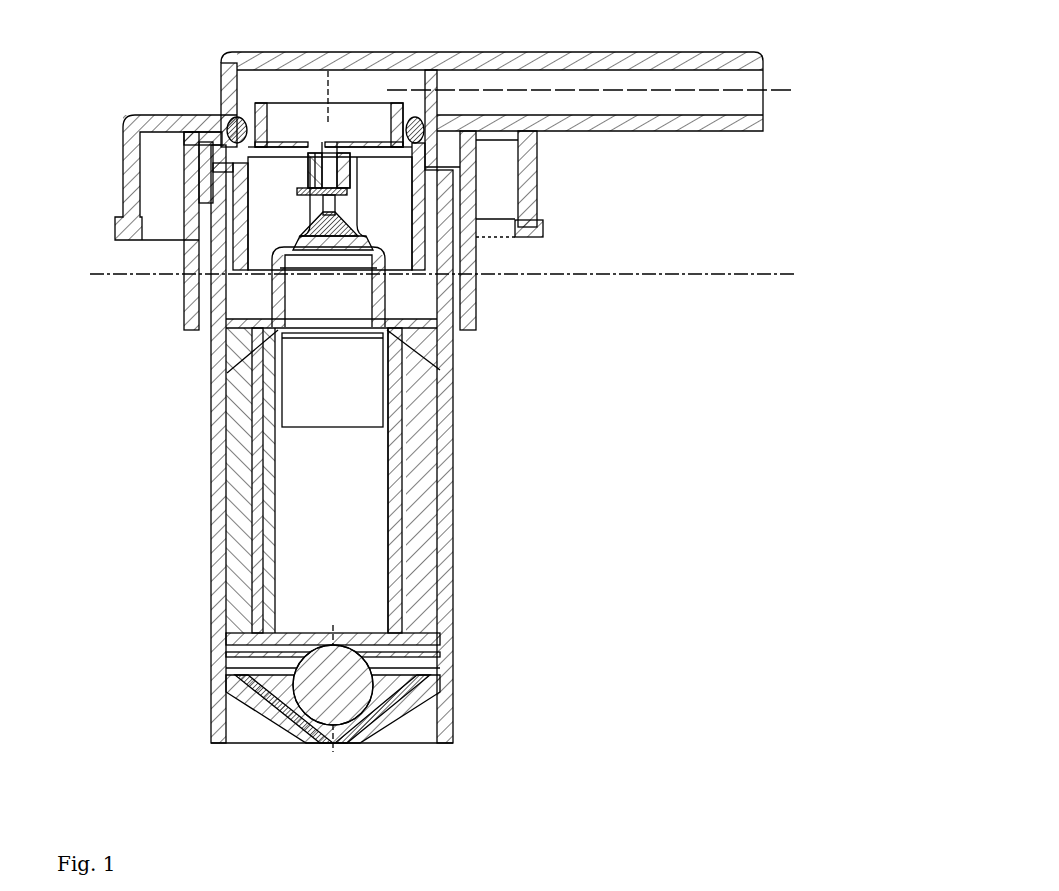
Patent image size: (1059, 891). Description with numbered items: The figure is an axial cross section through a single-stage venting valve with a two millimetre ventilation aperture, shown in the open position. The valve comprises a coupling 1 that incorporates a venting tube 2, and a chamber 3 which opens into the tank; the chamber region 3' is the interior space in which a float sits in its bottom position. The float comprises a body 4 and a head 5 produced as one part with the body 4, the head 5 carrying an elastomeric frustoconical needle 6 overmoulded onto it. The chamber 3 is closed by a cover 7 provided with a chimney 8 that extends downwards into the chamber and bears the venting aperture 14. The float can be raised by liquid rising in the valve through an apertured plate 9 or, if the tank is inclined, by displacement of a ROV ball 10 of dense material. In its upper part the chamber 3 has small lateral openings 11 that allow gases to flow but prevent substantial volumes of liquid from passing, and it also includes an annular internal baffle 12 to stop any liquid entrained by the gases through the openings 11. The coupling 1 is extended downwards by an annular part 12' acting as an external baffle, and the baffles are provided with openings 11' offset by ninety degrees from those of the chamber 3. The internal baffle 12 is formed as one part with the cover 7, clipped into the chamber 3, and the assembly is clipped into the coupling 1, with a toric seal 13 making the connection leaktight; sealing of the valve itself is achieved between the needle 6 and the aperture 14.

The coupling 1 is at (130, 160).
The venting tube 2 is at (632, 127).
The chamber 3 is at (380, 480).
The chamber 3' is at (222, 208).
The body 4 is at (430, 463).
The head 5 is at (395, 294).
The elastomeric frustoconical needle 6 is at (342, 226).
The cover 7 is at (301, 141).
The chimney 8 is at (341, 166).
The apertured plate 9 is at (397, 714).
The ROV ball 10 is at (333, 685).
The small lateral openings 11 is at (525, 184).
The openings 11' is at (502, 230).
The internal baffle 12 is at (234, 226).
The annular part (external baffle) 12' is at (149, 268).
The toric seal 13 is at (232, 126).
The venting aperture 14 is at (328, 189).